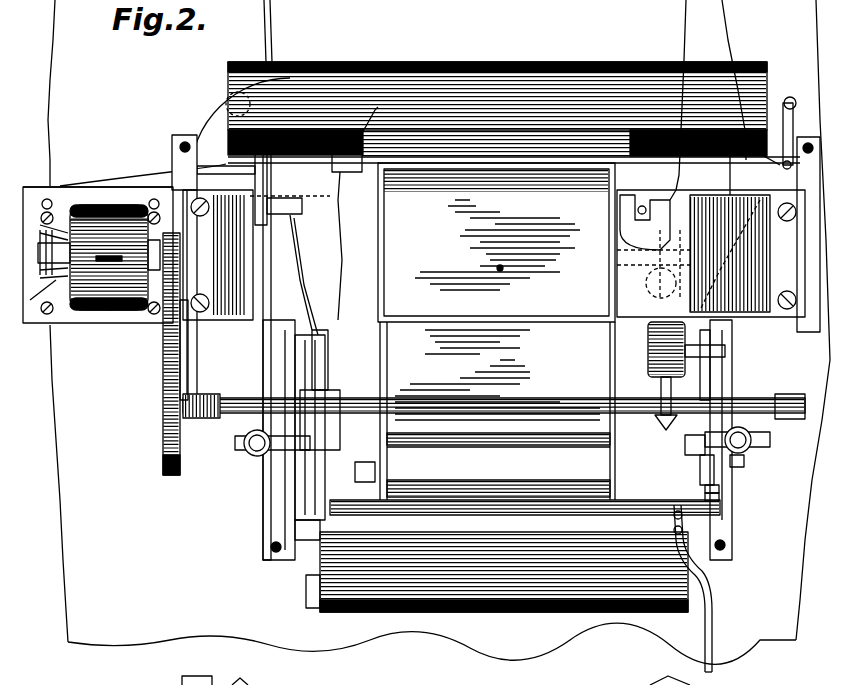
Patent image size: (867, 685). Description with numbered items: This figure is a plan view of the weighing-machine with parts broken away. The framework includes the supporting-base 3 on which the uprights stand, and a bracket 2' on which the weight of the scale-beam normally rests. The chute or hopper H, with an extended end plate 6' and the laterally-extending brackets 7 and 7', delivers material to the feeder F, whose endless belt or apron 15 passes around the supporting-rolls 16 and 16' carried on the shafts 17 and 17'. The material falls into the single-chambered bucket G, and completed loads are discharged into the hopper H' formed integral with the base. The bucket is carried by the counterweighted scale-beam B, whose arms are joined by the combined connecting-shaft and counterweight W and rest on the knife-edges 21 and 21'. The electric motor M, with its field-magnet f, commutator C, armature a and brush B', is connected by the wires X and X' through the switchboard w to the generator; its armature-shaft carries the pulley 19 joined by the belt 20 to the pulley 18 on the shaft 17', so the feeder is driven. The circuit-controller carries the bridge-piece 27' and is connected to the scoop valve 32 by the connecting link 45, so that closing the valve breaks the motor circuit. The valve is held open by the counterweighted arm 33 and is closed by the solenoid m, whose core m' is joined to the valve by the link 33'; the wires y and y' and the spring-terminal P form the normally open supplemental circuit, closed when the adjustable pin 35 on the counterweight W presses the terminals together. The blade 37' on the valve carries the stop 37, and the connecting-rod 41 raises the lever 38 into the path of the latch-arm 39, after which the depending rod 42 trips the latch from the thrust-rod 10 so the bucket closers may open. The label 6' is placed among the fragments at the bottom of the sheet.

The combined connecting-shaft and counterweight W is at (428, 62).
The electrical conductor y is at (671, 100).
The electrical conductor y' is at (734, 80).
The supporting-roll 16 is at (366, 113).
The bracket 2' is at (234, 127).
The switchboard or box w is at (225, 170).
The bridge-piece or switch proper 27' is at (290, 241).
The connecting link or rod 45 is at (300, 265).
The shaft 17 is at (347, 235).
The laterally-extending bracket 7 is at (270, 255).
The electrical conductor or wire X' is at (98, 175).
The electrical conductor or wire X is at (98, 265).
The electric motor M is at (109, 257).
The commutator C is at (109, 227).
The armature a is at (38, 258).
The brush B' is at (36, 226).
The counterweighted scale-beam B is at (376, 245).
The field-magnet f is at (90, 312).
The pulley 19 is at (150, 323).
The chute or hopper H is at (496, 242).
The feeder F is at (497, 411).
The endless belt or apron 15 is at (452, 443).
The valve 32 is at (500, 480).
The supporting-base 3 is at (262, 480).
The hopper H' is at (276, 440).
The knife-edge 21 is at (494, 399).
The knife-edge 21' is at (790, 417).
The pulley 18 is at (163, 430).
The belt 20 is at (170, 348).
The shaft 17' is at (254, 440).
The supporting-roll 16' is at (326, 390).
The counterweighted arm 33 is at (385, 472).
The laterally-extending bracket 7' is at (711, 253).
The lever 38 is at (703, 255).
The spring-terminal P is at (793, 115).
The adjustable pin 35 is at (791, 97).
The solenoid m is at (630, 349).
The core m' is at (623, 393).
The thrust-rod 10 is at (700, 415).
The link 33' is at (667, 460).
The latch-arm 39 is at (750, 444).
The connecting-rod 41 is at (744, 462).
The blade 37' is at (733, 493).
The stop 37 is at (729, 508).
The bucket G is at (366, 612).
The depending rod 42 is at (700, 618).
The extended end plate 6' is at (436, 678).